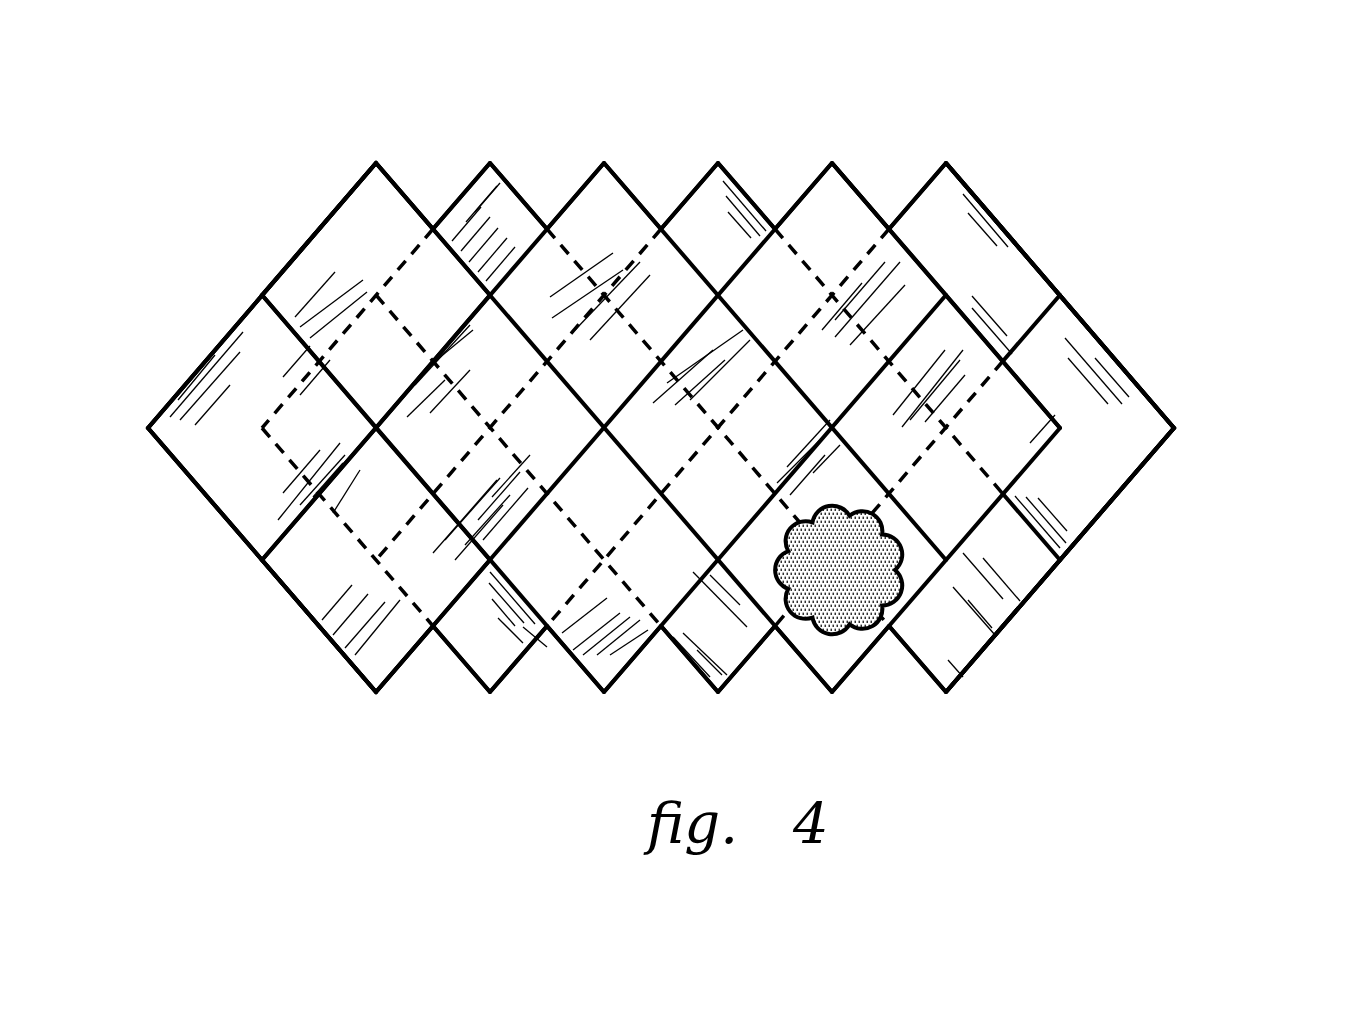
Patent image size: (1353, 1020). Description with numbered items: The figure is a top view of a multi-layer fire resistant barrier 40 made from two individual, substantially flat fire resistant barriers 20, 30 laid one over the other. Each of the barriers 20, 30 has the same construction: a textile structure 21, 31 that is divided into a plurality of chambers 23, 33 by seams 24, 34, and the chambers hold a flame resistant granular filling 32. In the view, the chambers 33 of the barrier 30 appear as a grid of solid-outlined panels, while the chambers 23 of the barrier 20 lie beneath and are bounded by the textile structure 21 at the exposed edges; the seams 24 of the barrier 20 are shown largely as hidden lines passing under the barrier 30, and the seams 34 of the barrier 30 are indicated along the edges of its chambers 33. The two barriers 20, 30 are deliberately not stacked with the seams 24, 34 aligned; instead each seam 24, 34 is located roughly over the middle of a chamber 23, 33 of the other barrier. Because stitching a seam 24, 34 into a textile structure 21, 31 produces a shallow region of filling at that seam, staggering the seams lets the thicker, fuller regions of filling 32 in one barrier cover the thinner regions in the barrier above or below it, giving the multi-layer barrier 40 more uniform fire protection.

The multi-layer fire resistant barrier 40 is at (1208, 186).
The fire resistant barrier 30 is at (260, 198).
The textile structure 31 is at (210, 356).
The chambers 33 is at (392, 236).
The fire resistant barrier 20 is at (1186, 374).
The textile structure 21 is at (973, 192).
The chambers 23 is at (506, 241).
The seams 24 is at (605, 560).
The seams 34 is at (832, 428).
The flame resistant granular filling 32 is at (864, 583).